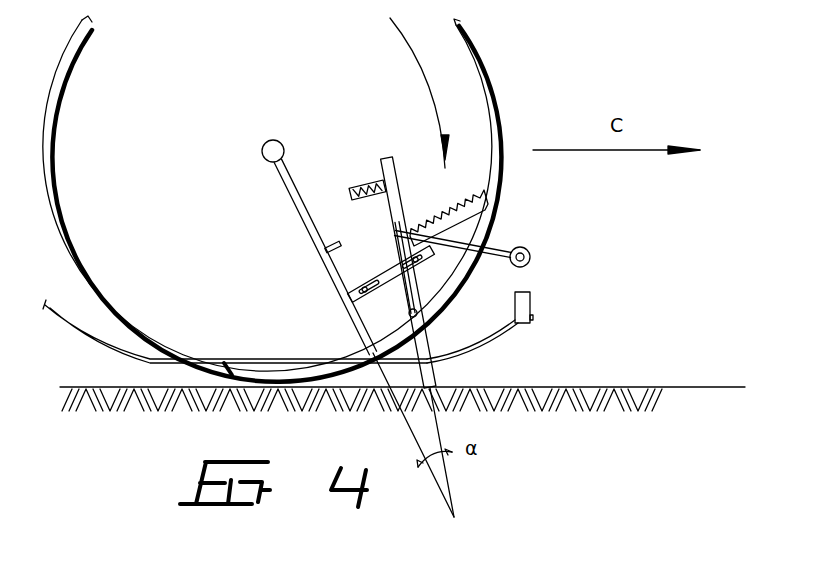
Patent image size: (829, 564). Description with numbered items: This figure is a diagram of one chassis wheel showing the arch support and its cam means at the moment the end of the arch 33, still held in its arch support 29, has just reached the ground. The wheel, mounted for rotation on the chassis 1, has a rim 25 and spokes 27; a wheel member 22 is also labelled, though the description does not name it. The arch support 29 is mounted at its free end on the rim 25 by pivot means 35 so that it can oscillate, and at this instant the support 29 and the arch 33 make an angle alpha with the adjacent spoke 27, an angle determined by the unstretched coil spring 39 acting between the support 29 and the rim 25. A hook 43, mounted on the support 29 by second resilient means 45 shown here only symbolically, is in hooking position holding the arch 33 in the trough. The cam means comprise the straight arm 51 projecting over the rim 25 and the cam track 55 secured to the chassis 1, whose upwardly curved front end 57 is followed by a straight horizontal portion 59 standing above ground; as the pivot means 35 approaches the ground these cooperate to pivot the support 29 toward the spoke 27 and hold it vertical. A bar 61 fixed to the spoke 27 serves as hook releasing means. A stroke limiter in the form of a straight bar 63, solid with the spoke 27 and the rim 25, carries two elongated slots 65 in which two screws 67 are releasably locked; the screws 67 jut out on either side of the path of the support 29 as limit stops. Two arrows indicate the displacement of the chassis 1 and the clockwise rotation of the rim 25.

The chassis 1 is at (532, 300).
The axle ball 22 is at (280, 143).
The wheel rim 25 is at (500, 105).
The wheel spoke 27 is at (290, 195).
The arch support 29 is at (387, 217).
The arch 33 is at (531, 258).
The pivot means 35 is at (420, 315).
The coil spring 39 is at (421, 227).
The hook 43 is at (391, 177).
The second resilient means 45 is at (352, 180).
The straight arm 51 is at (528, 250).
The cam track 55 is at (227, 363).
The upwardly curved front end 57 is at (500, 333).
The straight horizontal portion 59 is at (325, 365).
The bar 61 is at (333, 242).
The straight bar 63 is at (481, 238).
The elongated slot 65 is at (379, 277).
The screw 67 is at (362, 293).